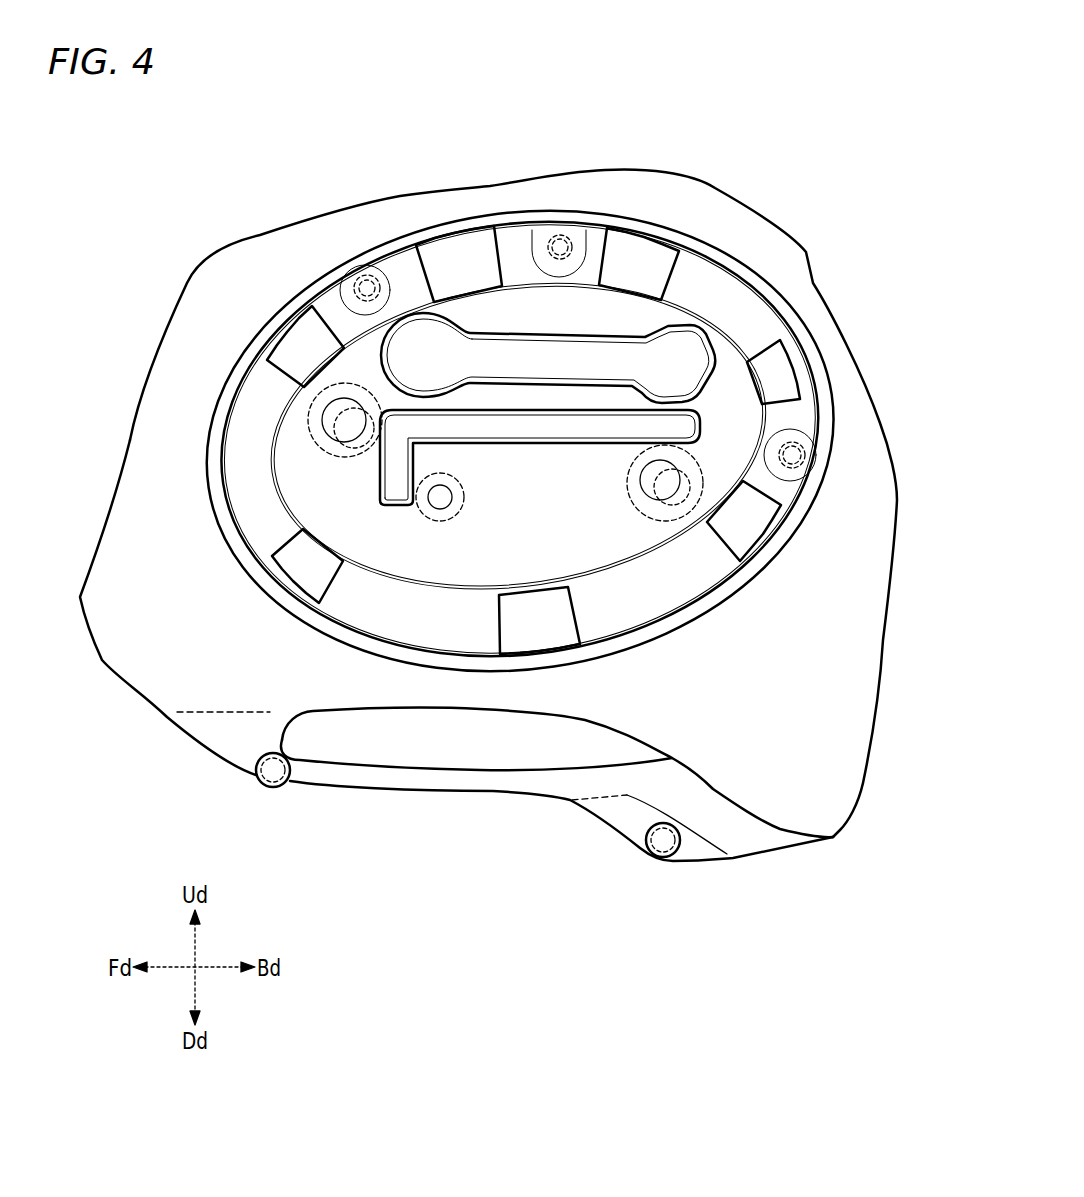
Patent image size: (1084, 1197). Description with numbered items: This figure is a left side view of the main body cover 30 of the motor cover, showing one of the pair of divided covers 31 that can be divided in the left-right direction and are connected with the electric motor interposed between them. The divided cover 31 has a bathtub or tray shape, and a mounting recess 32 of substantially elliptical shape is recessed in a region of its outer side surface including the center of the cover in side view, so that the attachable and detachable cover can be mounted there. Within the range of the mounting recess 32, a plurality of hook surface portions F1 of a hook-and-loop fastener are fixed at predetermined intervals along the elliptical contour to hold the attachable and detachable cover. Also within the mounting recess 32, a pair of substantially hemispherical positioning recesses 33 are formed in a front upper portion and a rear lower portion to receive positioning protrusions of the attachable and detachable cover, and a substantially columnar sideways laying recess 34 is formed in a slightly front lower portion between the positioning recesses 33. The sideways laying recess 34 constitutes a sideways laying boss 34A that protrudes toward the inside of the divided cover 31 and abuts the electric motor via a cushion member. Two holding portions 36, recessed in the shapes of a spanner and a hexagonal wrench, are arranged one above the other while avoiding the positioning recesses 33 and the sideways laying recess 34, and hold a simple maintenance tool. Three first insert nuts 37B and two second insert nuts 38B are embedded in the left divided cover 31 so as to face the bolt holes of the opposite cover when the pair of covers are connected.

The main body cover 30 is at (205, 228).
The divided cover 31 is at (148, 467).
The mounting recess 32 is at (228, 455).
The positioning recess 33 is at (345, 420).
The sideways laying recess 34 is at (438, 512).
The sideways laying boss 34A is at (440, 497).
The holding portion 36 is at (573, 347).
The first insert nut 37B is at (376, 250).
The second insert nut 38B is at (278, 790).
The hook surface portion F1 is at (457, 248).